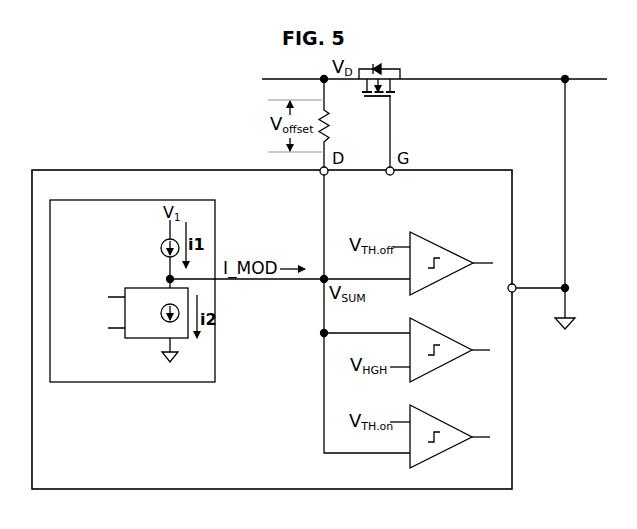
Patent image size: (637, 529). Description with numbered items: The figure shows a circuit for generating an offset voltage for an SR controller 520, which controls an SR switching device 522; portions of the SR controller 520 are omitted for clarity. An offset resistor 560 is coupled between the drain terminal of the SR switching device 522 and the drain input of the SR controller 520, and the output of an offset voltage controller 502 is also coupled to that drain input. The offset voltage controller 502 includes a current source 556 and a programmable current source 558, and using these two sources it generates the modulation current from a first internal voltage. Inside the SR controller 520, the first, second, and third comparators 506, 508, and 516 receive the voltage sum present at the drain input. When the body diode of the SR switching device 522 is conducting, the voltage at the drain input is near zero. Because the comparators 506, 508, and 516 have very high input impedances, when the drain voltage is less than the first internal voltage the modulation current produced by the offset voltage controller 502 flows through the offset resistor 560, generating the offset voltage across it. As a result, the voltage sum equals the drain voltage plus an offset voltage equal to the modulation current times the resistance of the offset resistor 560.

The SR controller 520 is at (145, 169).
The offset voltage controller 502 is at (97, 199).
The current source 556 is at (160, 247).
The programmable current source 558 is at (135, 287).
The offset resistor 560 is at (333, 130).
The SR switching device 522 is at (393, 88).
The second comparator 508 is at (445, 249).
The third comparator 516 is at (440, 368).
The first comparator 506 is at (442, 455).